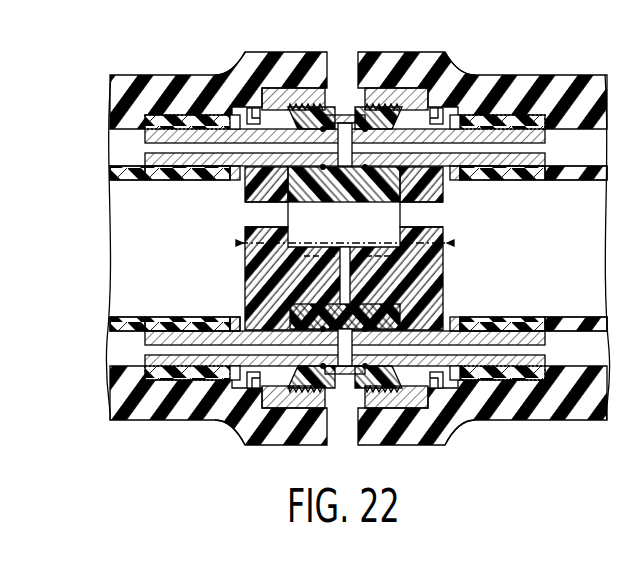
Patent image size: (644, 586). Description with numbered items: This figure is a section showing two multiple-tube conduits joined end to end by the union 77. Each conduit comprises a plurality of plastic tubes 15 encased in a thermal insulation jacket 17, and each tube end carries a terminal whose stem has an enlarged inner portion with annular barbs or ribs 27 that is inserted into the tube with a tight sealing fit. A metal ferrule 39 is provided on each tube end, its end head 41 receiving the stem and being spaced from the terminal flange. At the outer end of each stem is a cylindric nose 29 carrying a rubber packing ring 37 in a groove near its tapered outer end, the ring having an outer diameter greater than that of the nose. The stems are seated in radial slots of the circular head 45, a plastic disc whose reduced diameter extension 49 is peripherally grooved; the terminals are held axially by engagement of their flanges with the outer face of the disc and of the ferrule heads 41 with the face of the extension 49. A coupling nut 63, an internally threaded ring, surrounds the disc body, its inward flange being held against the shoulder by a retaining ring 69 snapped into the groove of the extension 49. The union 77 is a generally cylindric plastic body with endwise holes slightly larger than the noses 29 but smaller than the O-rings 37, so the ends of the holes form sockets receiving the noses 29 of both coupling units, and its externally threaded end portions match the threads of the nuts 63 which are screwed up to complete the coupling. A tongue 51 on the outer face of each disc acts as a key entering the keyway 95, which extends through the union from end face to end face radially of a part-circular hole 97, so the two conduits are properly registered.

The plastic tube 15 is at (113, 182).
The thermal insulation jacket 17 is at (148, 75).
The annular barbs or ribs 27 is at (220, 317).
The cylindric nose 29 is at (336, 202).
The packing ring 37 is at (337, 200).
The metal ferrule 39 is at (195, 181).
The end head 41 is at (235, 168).
The circular head 45 is at (240, 243).
The reduced diameter extension 49 is at (232, 107).
The tongue 51 is at (353, 252).
The coupling nut 63 is at (290, 88).
The retaining ring 69 is at (253, 108).
The union 77 is at (345, 115).
The keyway 95 is at (323, 250).
The part-circular hole 97 is at (287, 203).